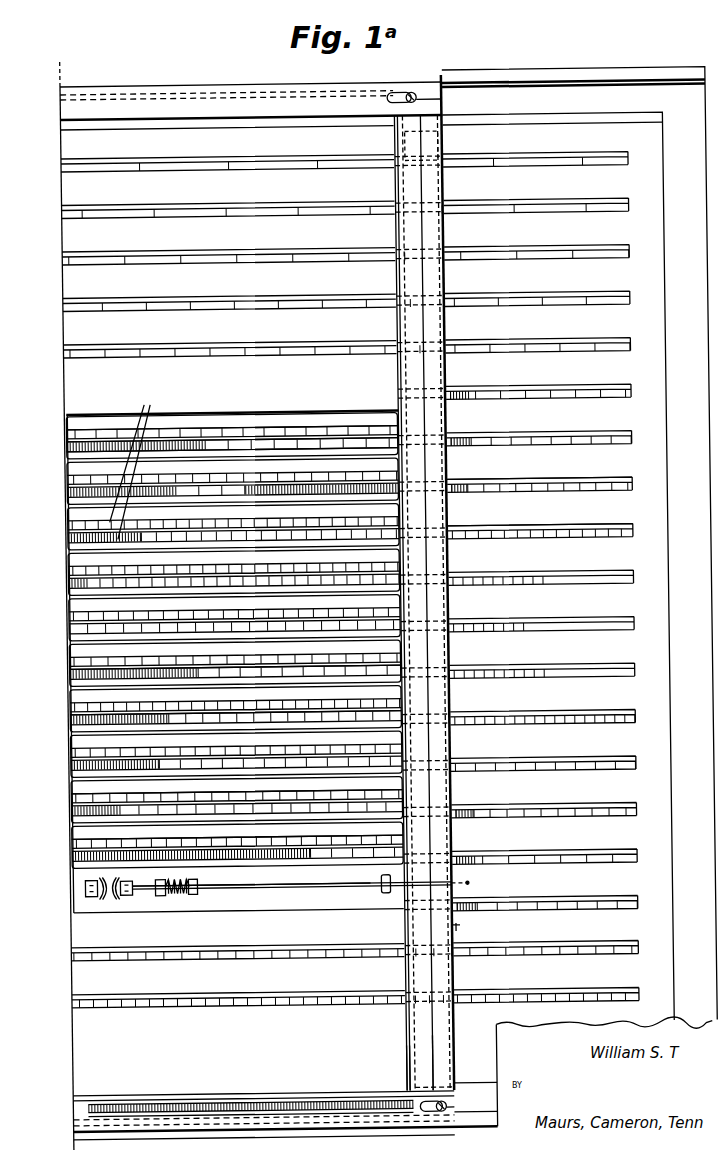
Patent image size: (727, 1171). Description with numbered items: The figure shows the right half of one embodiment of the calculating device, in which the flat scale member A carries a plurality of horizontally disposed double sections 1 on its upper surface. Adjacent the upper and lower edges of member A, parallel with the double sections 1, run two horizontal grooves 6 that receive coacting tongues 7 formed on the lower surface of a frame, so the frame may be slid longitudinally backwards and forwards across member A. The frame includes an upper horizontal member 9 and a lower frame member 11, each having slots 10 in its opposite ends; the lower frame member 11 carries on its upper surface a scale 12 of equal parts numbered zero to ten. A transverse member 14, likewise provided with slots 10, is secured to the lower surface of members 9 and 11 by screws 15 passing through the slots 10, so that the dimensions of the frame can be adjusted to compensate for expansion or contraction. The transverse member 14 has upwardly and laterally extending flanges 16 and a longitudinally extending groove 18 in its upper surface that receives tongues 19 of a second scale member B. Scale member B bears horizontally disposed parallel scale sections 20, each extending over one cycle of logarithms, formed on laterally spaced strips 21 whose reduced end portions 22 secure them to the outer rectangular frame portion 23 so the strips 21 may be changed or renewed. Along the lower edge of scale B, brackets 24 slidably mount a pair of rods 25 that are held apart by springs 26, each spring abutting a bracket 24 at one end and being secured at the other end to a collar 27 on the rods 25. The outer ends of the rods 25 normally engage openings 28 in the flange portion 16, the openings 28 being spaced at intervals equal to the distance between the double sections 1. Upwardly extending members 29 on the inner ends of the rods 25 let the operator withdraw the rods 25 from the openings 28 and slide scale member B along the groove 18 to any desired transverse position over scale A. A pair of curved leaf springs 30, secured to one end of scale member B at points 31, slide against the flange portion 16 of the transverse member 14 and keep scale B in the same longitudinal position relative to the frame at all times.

The double section 1 is at (627, 358).
The groove 6 is at (588, 92).
The tongue 7 is at (305, 1125).
The upper horizontal member 9 is at (137, 118).
The slot 10 is at (432, 88).
The lower frame member 11 is at (197, 1128).
The scale of equal parts 12 is at (190, 1108).
The transverse member 14 is at (428, 1070).
The screw 15 is at (405, 96).
The flange 16 is at (427, 152).
The groove 18 is at (397, 1052).
The tongue 19 is at (458, 889).
The scale section 20 is at (343, 432).
The strip 21 is at (288, 425).
The reduced portion 22 is at (398, 425).
The outer rectangular frame portion 23 is at (237, 647).
The bracket 24 is at (150, 898).
The rod 25 is at (72, 896).
The spring 26 is at (170, 900).
The collar 27 is at (186, 898).
The opening 28 is at (450, 933).
The upwardly extending member 29 is at (108, 900).
The curved leaf spring 30 is at (445, 535).
The securing point 31 is at (448, 490).